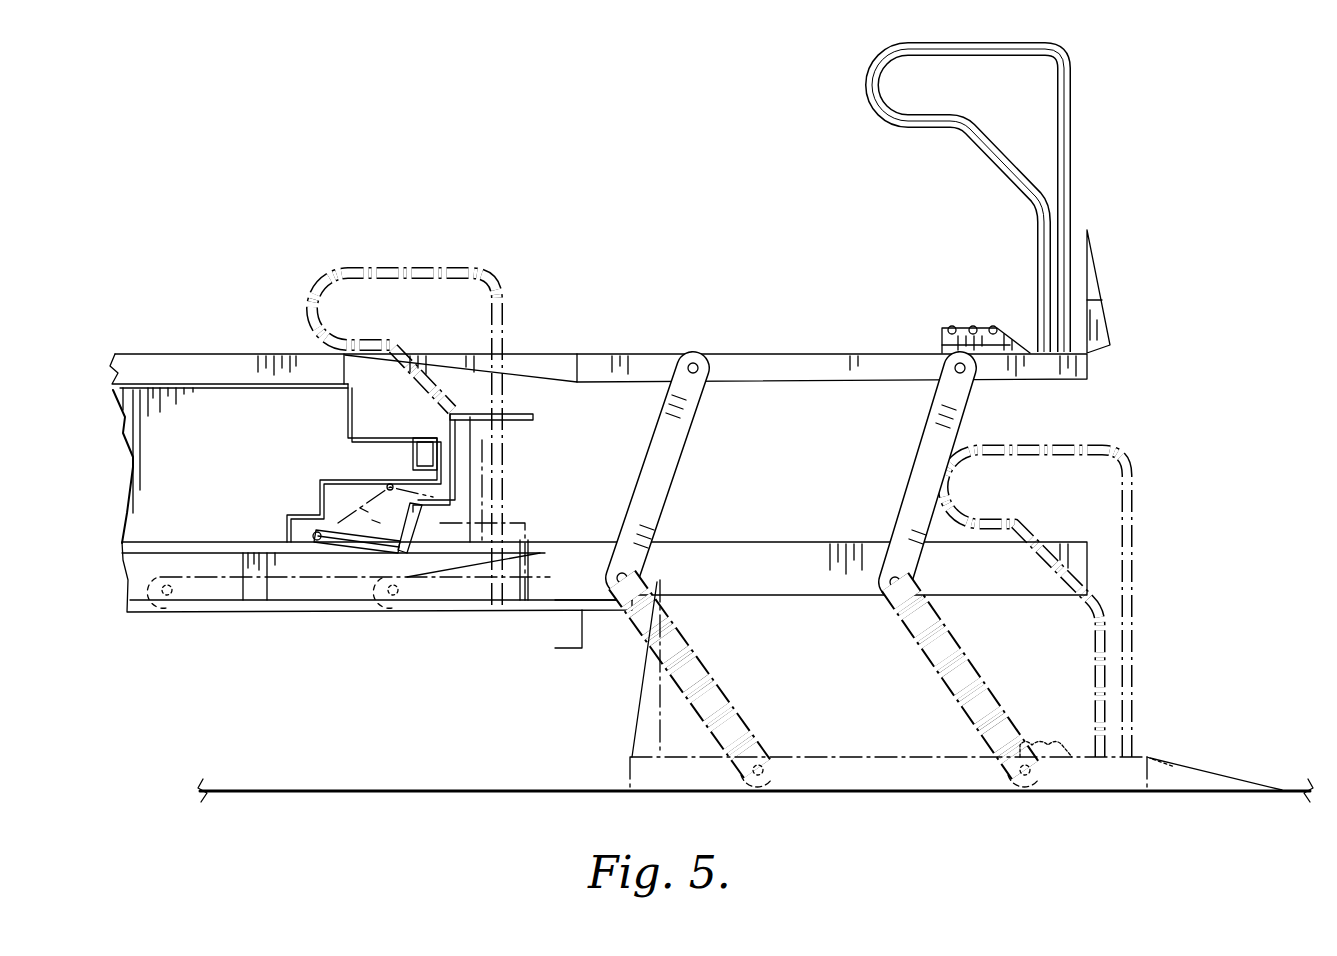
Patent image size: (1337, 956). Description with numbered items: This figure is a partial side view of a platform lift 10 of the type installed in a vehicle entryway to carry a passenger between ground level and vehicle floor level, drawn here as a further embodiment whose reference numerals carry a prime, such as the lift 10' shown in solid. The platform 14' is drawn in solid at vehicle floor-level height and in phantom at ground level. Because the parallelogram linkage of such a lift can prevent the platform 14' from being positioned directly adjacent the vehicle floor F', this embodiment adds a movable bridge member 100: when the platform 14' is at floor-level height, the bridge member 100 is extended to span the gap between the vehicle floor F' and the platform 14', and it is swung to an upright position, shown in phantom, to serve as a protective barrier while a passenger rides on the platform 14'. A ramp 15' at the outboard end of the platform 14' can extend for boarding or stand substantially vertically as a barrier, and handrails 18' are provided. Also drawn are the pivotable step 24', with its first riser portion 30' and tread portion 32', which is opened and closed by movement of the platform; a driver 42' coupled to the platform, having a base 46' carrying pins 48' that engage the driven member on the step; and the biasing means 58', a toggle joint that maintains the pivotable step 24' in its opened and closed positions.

The lift 10 is at (856, 488).
The lift 10' is at (1190, 138).
The platform 14' is at (827, 532).
The ramp 15' is at (1184, 510).
The handrails 18' is at (769, 385).
The pivotable step 24' is at (539, 499).
The first riser portion 30' is at (520, 403).
The tread portion 32' is at (371, 448).
The driver 42' is at (948, 297).
The base 46' is at (931, 328).
The pins 48' is at (979, 295).
The biasing means 58' is at (351, 556).
The bridge member 100 is at (560, 354).
The vehicle floor F' is at (153, 411).